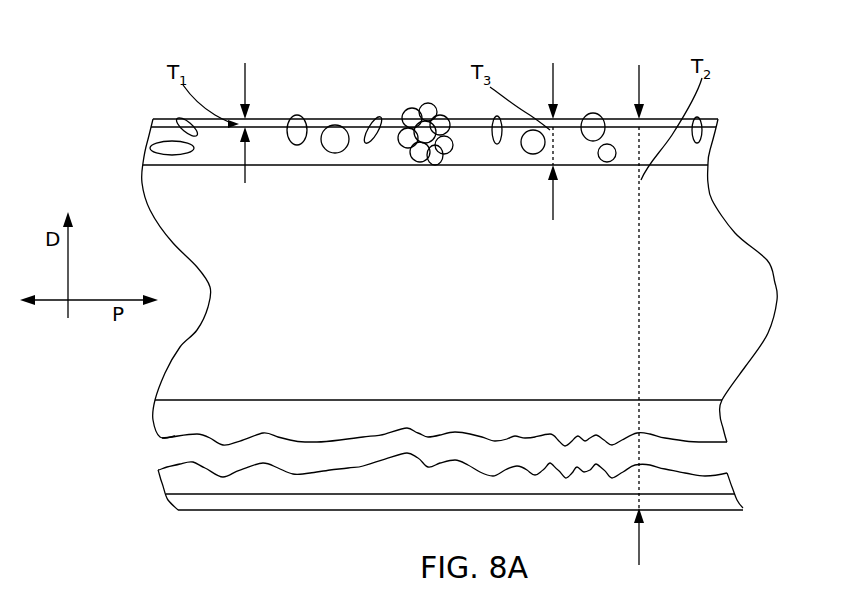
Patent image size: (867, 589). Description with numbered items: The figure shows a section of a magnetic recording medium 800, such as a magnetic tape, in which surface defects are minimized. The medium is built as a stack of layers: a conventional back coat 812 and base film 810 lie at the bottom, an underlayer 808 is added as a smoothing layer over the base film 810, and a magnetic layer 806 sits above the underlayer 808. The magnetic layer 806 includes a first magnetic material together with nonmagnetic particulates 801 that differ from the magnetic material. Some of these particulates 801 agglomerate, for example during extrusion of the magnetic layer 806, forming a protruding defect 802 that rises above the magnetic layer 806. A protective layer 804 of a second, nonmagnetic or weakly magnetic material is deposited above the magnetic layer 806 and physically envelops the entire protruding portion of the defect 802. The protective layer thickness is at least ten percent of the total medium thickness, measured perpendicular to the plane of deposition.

The magnetic recording medium 800 is at (110, 55).
The nonmagnetic particulates 801 is at (341, 122).
The protruding defect 802 is at (418, 88).
The protective layer 804 is at (718, 122).
The magnetic layer 806 is at (708, 157).
The underlayer 808 is at (768, 263).
The base film 810 is at (725, 467).
The back coat 812 is at (738, 497).